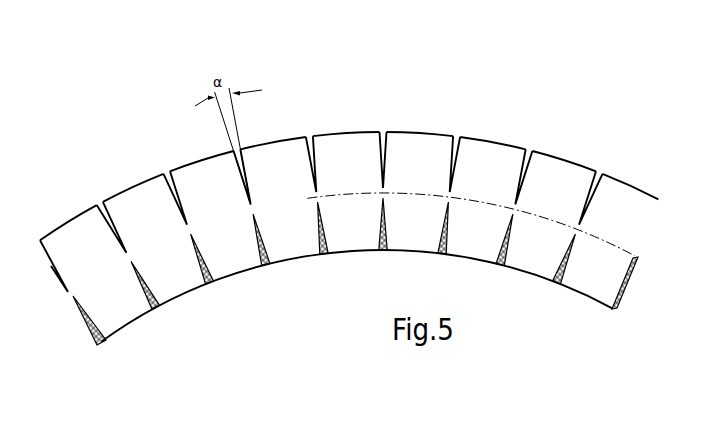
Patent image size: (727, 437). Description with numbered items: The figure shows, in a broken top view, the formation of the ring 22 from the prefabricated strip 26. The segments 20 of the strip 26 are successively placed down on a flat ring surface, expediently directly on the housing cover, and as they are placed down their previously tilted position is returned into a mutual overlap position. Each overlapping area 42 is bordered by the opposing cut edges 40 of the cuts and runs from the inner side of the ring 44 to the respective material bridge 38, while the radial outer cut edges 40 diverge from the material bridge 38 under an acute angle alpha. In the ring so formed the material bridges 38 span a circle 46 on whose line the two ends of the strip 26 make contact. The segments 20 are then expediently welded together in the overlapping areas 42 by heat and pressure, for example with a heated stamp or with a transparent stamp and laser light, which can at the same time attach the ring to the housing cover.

The segment 20 is at (67, 235).
The ring 22 is at (351, 154).
The prefabricated strip 26 is at (567, 157).
The material bridge 38 is at (252, 212).
The cut edge 40 is at (316, 190).
The overlapping area 42 is at (258, 240).
The inner side of the ring 44 is at (187, 295).
The circle 46 is at (410, 188).